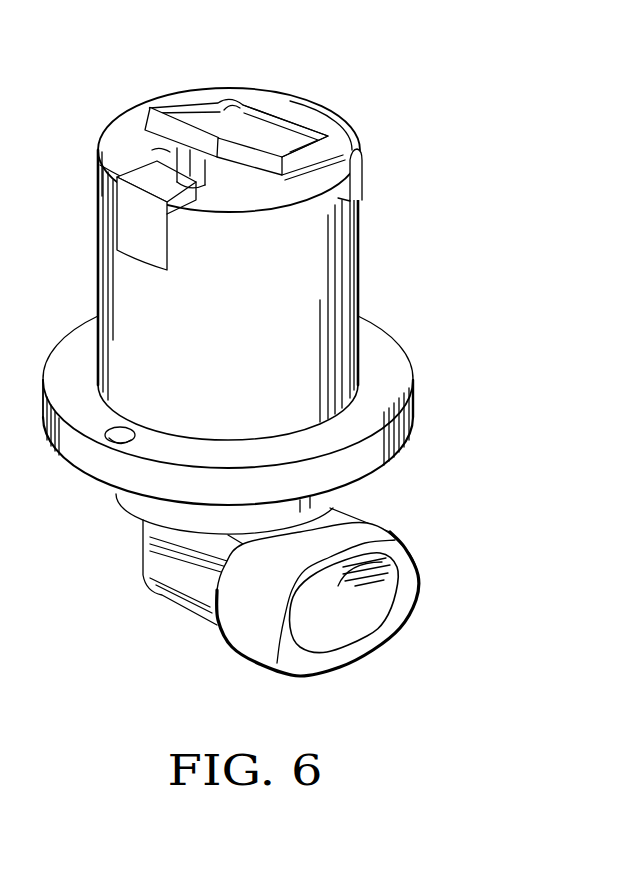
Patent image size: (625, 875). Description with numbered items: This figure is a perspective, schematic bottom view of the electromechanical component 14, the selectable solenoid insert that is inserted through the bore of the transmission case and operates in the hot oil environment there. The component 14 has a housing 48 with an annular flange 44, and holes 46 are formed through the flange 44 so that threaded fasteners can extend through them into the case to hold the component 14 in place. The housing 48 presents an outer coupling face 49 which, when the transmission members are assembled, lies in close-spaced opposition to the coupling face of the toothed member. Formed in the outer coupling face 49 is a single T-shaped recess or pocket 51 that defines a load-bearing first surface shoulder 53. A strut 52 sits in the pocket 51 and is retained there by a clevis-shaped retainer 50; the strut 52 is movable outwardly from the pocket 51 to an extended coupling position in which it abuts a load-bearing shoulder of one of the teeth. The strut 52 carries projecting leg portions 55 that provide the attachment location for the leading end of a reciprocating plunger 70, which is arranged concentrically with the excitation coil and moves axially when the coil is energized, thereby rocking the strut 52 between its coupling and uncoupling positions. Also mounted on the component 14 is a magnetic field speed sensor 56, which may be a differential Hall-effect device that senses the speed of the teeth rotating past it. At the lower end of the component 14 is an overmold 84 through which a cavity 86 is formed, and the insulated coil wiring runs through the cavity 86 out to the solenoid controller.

The electromechanical component 14 is at (360, 230).
The annular flange 44 is at (415, 398).
The holes 46 is at (106, 440).
The housing 48 is at (360, 274).
The outer coupling face 49 is at (128, 150).
The clevis-shaped retainer 50 is at (340, 142).
The T-shaped recess or pocket 51 is at (160, 148).
The strut 52 is at (233, 126).
The first surface shoulder 53 is at (217, 173).
The projecting leg portions 55 is at (180, 158).
The magnetic field speed sensor 56 is at (138, 215).
The reciprocating plunger 70 is at (228, 162).
The overmold 84 is at (237, 647).
The cavity 86 is at (390, 567).